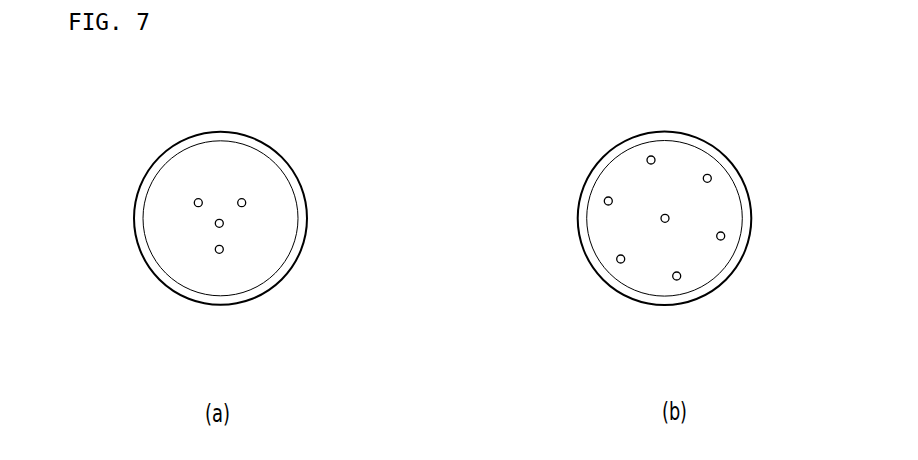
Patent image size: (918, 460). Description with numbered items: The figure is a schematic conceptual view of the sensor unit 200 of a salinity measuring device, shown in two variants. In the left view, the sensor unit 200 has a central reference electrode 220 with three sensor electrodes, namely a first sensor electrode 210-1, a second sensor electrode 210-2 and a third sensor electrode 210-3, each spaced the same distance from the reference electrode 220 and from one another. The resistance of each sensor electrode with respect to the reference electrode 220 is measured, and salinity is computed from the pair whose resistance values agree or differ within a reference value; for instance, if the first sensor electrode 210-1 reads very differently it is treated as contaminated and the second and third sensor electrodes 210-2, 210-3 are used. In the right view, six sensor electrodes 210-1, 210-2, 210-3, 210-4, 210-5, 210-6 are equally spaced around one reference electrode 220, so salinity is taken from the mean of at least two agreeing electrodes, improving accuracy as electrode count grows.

The sensor unit 200 is at (127, 88).
The first sensor electrode 210-1 is at (195, 200).
The second sensor electrode 210-2 is at (219, 254).
The third sensor electrode 210-3 is at (245, 200).
The fourth sensor electrode 210-4 is at (677, 280).
The fifth sensor electrode 210-5 is at (724, 237).
The sixth sensor electrode 210-6 is at (711, 175).
The reference electrode 220 is at (223, 222).